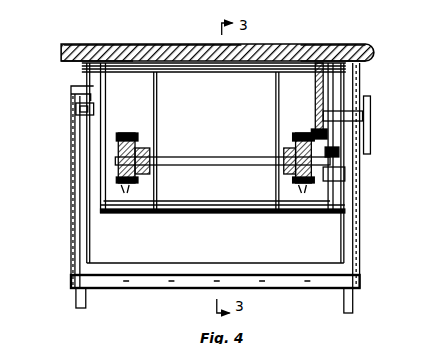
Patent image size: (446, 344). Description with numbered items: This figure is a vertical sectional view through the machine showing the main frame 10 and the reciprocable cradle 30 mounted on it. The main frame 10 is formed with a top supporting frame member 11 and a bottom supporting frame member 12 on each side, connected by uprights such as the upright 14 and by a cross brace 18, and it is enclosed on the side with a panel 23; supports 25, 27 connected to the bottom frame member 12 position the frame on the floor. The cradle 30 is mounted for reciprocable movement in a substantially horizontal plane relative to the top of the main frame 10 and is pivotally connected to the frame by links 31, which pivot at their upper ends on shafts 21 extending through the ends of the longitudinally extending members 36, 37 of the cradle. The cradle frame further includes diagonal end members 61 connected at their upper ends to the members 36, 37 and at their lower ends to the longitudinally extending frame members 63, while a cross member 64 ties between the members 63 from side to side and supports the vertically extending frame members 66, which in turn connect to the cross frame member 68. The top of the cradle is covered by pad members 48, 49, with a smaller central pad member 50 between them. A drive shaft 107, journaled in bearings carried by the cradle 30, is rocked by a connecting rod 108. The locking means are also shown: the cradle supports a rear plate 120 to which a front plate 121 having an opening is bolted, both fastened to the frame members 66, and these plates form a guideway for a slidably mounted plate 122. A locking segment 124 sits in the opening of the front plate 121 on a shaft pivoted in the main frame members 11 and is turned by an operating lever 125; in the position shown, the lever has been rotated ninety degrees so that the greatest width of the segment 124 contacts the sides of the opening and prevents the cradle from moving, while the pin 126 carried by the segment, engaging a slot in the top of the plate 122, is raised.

The main frame 10 is at (364, 212).
The top supporting frame member 11 is at (80, 103).
The bottom supporting frame member 12 is at (88, 278).
The upright 14 is at (85, 247).
The cross brace 18 is at (258, 278).
The shaft 21 is at (214, 77).
The side panel 23 is at (66, 226).
The support 25 is at (83, 300).
The support 27 is at (344, 305).
The cradle 30 is at (183, 222).
The link 31 is at (86, 90).
The longitudinally extending member 36 is at (350, 62).
The longitudinally extending member 37 is at (80, 62).
The pad member 48 is at (312, 45).
The pad member 49 is at (93, 44).
The pad member 50 is at (168, 44).
The diagonal end member 61 is at (103, 98).
The longitudinally extending frame member 63 is at (108, 212).
The cross member 64 is at (248, 213).
The vertically extending frame member 66 is at (156, 107).
The cross frame member 68 is at (240, 62).
The drive shaft 107 is at (212, 155).
The connecting rod 108 is at (340, 178).
The rear plate 120 is at (313, 97).
The front plate 121 is at (336, 150).
The slidably mounted plate 122 is at (313, 110).
The locking segment 124 is at (330, 109).
The operating lever 125 is at (371, 136).
The pin 126 is at (340, 45).